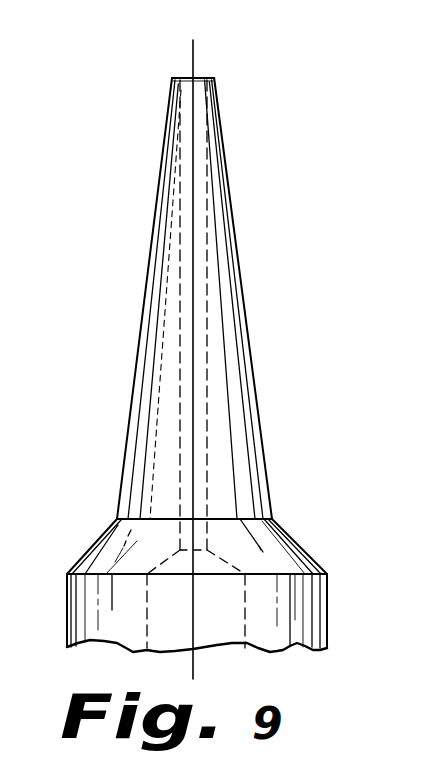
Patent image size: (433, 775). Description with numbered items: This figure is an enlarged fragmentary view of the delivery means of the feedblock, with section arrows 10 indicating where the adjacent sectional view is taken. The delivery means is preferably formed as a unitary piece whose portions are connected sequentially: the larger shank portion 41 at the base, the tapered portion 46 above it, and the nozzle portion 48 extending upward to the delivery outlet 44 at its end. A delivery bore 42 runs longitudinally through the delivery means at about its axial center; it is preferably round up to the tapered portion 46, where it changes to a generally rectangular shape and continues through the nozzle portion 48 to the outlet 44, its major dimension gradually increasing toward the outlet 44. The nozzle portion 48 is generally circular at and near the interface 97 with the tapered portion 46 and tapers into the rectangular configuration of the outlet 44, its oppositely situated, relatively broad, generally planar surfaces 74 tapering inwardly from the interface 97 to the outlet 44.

The section line 10- 10 is at (176, 54).
The larger shank portion 41 is at (313, 612).
The delivery bore 42 is at (178, 291).
The delivery outlet 44 is at (198, 98).
The tapered portion 46 is at (293, 545).
The nozzle portion 48 is at (240, 397).
The tapered surfaces 74 is at (137, 362).
The interface 97 is at (115, 518).